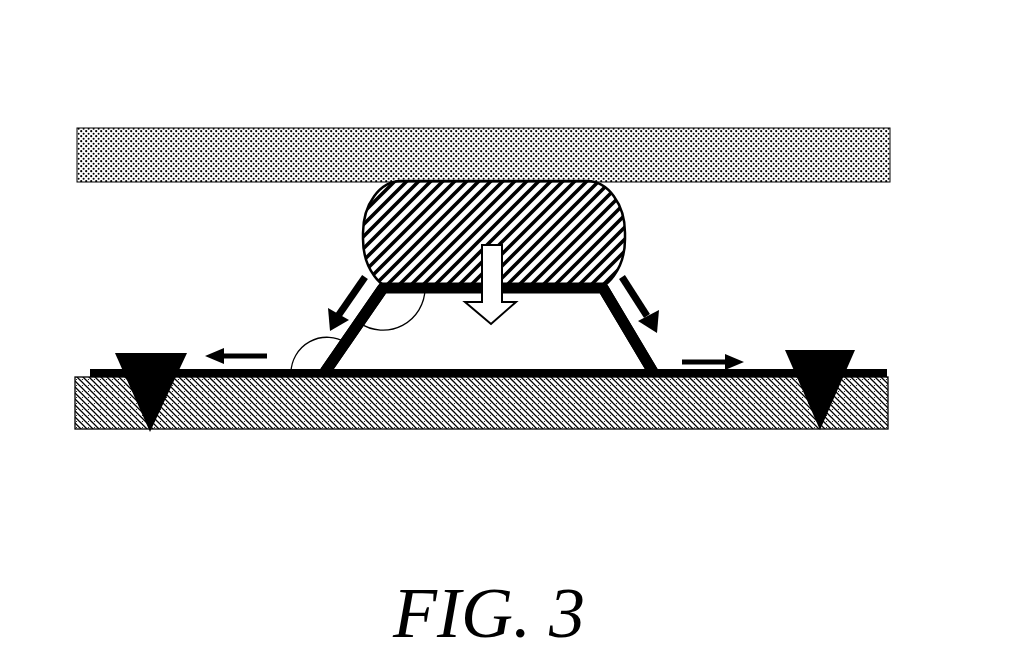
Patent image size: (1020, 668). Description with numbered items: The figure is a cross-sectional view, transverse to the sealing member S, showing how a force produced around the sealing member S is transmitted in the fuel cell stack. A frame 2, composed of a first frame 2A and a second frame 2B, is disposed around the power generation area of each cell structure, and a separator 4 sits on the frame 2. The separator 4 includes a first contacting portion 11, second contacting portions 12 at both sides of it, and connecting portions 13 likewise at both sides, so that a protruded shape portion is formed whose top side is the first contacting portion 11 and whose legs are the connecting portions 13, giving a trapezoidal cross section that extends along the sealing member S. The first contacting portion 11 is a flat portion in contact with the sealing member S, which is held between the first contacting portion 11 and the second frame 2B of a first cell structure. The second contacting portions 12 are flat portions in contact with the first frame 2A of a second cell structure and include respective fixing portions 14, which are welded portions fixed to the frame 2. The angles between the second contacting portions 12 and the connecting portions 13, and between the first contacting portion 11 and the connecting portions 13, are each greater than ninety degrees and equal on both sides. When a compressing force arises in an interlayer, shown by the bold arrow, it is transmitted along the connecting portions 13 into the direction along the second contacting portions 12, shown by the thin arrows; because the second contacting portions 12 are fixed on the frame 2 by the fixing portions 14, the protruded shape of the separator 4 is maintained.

The frame 2 is at (482, 283).
The first frame 2A is at (207, 405).
The second frame 2B is at (117, 150).
The separator 4 is at (878, 364).
The sealing member S is at (485, 203).
The first contacting portion 11 is at (528, 296).
The second contacting portion 12 is at (100, 368).
The connecting portion 13 is at (630, 285).
The fixing portion 14 is at (153, 352).